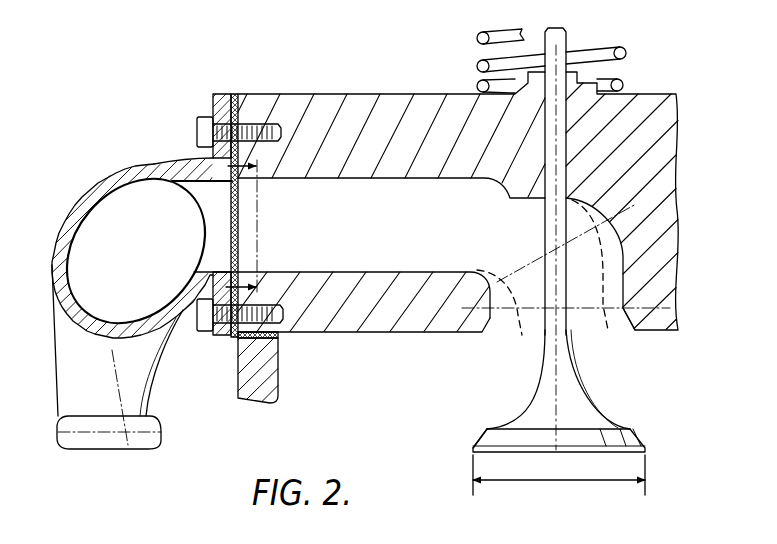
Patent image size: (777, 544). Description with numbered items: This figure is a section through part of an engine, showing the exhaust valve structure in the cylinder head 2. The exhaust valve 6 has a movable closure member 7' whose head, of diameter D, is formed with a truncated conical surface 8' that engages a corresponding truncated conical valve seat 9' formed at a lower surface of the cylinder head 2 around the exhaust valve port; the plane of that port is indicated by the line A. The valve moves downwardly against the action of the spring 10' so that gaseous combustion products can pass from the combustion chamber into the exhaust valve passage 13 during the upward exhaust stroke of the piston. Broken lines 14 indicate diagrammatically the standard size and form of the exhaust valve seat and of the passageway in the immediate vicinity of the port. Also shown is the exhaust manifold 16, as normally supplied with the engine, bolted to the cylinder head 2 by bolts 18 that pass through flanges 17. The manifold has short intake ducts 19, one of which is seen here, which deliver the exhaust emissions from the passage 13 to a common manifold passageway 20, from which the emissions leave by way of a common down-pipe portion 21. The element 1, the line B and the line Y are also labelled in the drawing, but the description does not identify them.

The cylinder head boss 1 is at (243, 388).
The cylinder head 2 is at (367, 94).
The exhaust valve 6 is at (600, 398).
The movable closure member 7' is at (559, 416).
The truncated conical surface 8' is at (455, 430).
The truncated conical valve seat 9' is at (626, 350).
The spring 10' is at (574, 61).
The exhaust valve passage 13 is at (344, 229).
The broken lines 14 is at (517, 300).
The exhaust manifold 16 is at (90, 178).
The flanges 17 is at (216, 101).
The bolts 18 is at (198, 128).
The short intake ducts 19 is at (230, 227).
The common manifold passageway 20 is at (144, 256).
The common down-pipe portion 21 is at (140, 378).
The line A— A is at (470, 313).
The section B is at (228, 168).
The diameter D is at (534, 482).
The axis Y is at (624, 207).